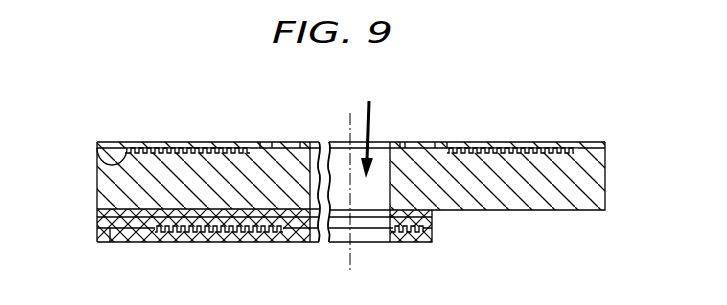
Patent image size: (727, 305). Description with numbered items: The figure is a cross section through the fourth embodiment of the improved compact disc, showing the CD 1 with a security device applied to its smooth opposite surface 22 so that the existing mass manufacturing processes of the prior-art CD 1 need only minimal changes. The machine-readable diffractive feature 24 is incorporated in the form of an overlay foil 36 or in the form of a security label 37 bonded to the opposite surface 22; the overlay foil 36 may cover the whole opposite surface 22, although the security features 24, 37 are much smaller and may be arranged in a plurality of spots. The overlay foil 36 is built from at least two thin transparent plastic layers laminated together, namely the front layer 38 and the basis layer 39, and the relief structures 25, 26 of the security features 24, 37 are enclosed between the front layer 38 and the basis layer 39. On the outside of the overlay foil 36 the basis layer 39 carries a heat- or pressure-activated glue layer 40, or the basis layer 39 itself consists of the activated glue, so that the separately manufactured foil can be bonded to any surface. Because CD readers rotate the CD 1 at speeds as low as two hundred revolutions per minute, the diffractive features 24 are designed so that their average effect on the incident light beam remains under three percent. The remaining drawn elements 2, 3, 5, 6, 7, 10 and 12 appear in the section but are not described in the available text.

The compact disc 1 is at (97, 190).
The structured surface region 2 is at (252, 133).
The direction of insertion 3 is at (367, 126).
The surface layer 5 is at (443, 142).
The cover layer 6 is at (396, 142).
The intermediate layer 7 is at (425, 142).
The center axis 10 is at (348, 125).
The recess 12 is at (108, 158).
The opposite surface 22 is at (555, 212).
The diffractive feature 24 is at (283, 245).
The relief structure 25 is at (151, 242).
The relief structure 26 is at (432, 225).
The overlay foil 36 is at (82, 207).
The security label 37 is at (425, 243).
The front layer 38 is at (110, 232).
The basis layer 39 is at (127, 220).
The glue layer 40 is at (293, 245).